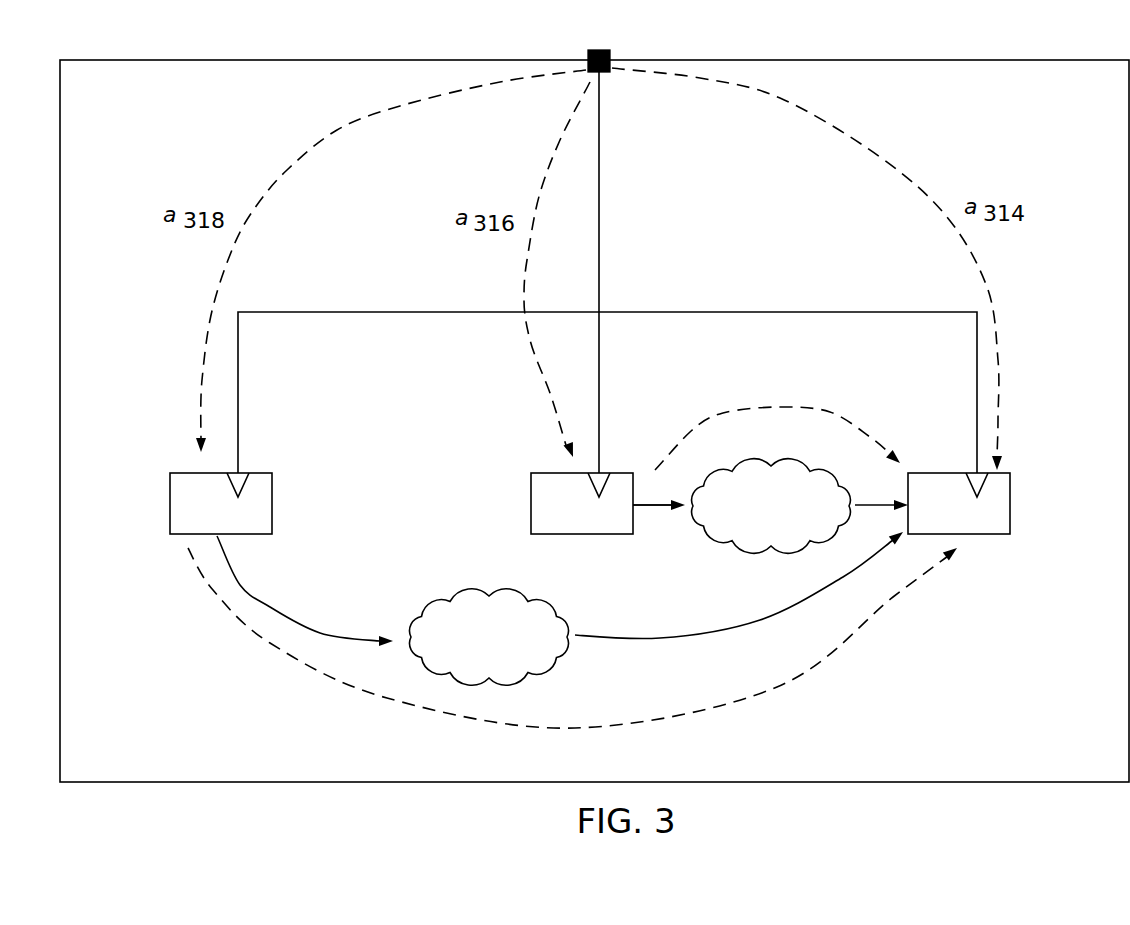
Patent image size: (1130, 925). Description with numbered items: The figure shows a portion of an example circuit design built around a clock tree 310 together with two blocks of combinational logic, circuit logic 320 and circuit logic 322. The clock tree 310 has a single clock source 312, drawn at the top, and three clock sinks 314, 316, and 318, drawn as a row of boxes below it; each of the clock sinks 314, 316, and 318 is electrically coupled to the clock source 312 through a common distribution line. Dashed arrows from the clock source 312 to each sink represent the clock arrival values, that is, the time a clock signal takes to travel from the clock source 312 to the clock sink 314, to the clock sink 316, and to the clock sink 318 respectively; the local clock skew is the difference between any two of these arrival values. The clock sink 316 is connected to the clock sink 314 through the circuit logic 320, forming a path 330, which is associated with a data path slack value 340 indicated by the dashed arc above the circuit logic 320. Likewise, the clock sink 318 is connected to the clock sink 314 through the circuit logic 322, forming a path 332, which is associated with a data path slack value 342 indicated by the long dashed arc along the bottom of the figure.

The clock tree 310 is at (218, 163).
The clock source 312 is at (611, 53).
The clock sink 314 is at (1011, 505).
The clock sink 316 is at (530, 505).
The clock sink 318 is at (273, 505).
The circuit logic 320 is at (752, 513).
The circuit logic 322 is at (470, 645).
The path 330 is at (645, 505).
The path 332 is at (335, 633).
The data path slack value 340 is at (830, 410).
The data path slack value 342 is at (775, 688).